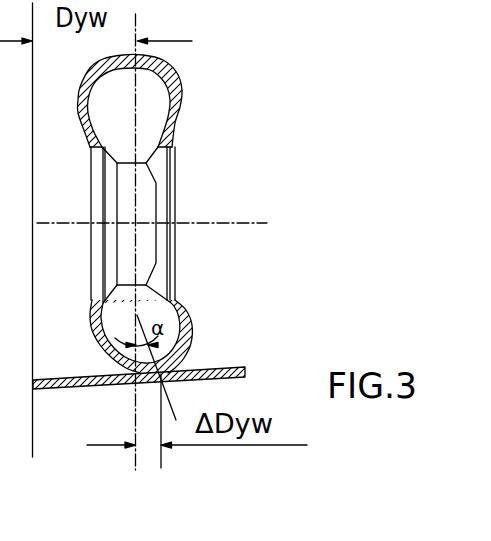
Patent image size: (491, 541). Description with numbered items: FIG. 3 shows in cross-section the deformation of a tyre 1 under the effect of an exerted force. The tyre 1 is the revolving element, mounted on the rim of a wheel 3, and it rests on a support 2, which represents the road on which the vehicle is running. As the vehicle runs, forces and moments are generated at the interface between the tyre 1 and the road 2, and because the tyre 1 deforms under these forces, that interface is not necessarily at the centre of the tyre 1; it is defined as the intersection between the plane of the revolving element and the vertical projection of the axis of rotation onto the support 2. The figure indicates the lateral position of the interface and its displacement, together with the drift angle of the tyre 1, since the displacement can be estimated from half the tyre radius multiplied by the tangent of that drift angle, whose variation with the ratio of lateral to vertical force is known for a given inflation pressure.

The tyre 1 is at (181, 78).
The support 2 is at (222, 379).
The wheel 3 is at (162, 203).